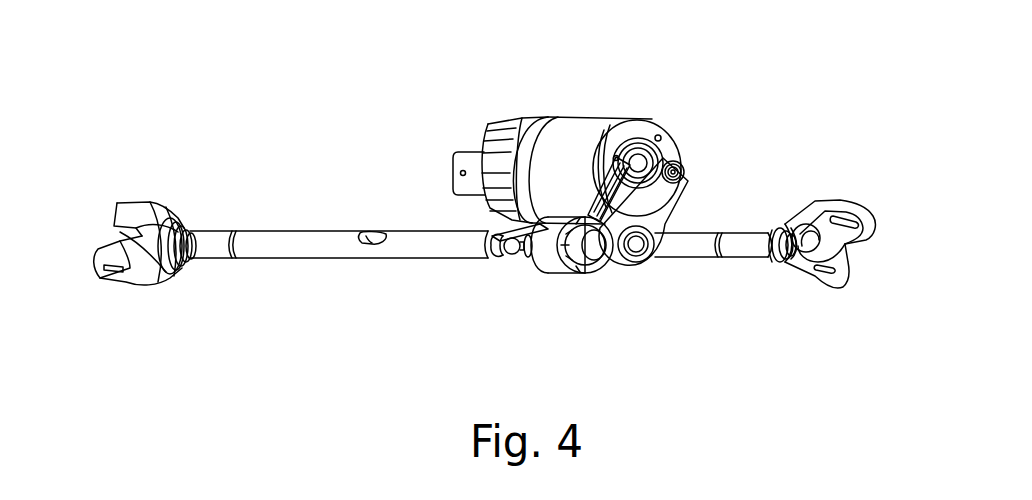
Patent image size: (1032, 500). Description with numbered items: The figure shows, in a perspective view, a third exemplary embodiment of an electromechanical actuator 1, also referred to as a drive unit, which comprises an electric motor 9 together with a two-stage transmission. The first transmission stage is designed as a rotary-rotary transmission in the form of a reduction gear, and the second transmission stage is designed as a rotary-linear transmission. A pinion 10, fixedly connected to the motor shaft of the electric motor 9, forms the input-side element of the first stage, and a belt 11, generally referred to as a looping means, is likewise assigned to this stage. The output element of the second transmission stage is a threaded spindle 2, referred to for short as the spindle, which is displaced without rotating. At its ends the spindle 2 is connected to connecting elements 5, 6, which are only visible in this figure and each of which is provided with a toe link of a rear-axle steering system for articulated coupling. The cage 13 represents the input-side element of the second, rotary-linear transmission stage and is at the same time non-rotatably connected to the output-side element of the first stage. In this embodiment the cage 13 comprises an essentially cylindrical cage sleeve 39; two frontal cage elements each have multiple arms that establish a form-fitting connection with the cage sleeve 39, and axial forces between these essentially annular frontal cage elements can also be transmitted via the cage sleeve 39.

The actuator 1 is at (288, 75).
The threaded spindle 2 is at (673, 260).
The connecting element 5 is at (110, 295).
The connecting element 6 is at (822, 293).
The electric motor 9 is at (683, 133).
The pinion 10 is at (688, 168).
The belt 11 is at (677, 203).
The cage 13 is at (565, 275).
The cage sleeve 39 is at (572, 245).